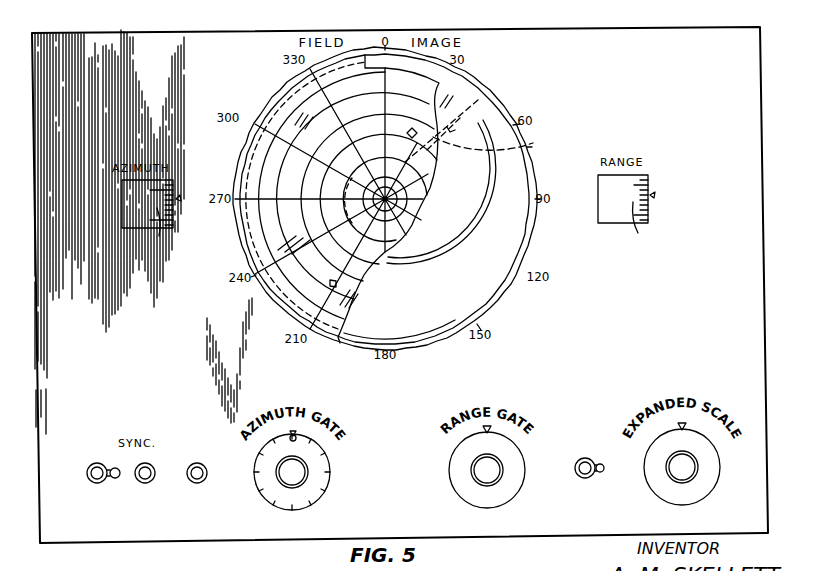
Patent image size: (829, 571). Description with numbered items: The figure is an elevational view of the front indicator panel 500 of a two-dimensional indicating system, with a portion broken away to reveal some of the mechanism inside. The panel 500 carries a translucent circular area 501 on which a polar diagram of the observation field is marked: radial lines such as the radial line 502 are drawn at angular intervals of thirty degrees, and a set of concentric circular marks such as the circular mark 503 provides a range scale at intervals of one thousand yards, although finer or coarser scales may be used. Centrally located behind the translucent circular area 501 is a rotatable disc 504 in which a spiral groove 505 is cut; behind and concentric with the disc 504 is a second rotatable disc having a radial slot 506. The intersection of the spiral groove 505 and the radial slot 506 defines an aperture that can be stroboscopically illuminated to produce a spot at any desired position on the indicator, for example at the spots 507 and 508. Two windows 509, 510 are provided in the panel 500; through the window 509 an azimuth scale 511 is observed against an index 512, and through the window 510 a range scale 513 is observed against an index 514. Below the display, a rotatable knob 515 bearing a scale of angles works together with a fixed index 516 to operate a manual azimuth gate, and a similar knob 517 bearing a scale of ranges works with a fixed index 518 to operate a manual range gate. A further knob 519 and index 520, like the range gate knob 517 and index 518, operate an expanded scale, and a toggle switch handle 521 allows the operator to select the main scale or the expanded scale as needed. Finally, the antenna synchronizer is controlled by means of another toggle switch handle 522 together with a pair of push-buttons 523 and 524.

The panel 500 is at (658, 38).
The translucent circular area 501 is at (270, 225).
The radial line 502 is at (307, 97).
The concentric circular mark 503 is at (298, 130).
The rotatable disc 504 is at (472, 299).
The spiral groove 505 is at (473, 228).
The radial slot 506 is at (532, 144).
The spot 507 is at (306, 312).
The spot 508 is at (455, 97).
The window 509 is at (125, 229).
The window 510 is at (648, 178).
The azimuth scale 511 is at (170, 231).
The index 512 is at (177, 198).
The range scale 513 is at (651, 225).
The index 514 is at (652, 196).
The rotatable knob 515 is at (322, 462).
The fixed index 516 is at (300, 433).
The knob 517 is at (522, 463).
The fixed index 518 is at (492, 432).
The knob 519 is at (712, 486).
The index 520 is at (690, 430).
The toggle switch handle 521 is at (600, 463).
The toggle switch handle 522 is at (113, 479).
The push-button 523 is at (147, 480).
The push-button 524 is at (193, 480).